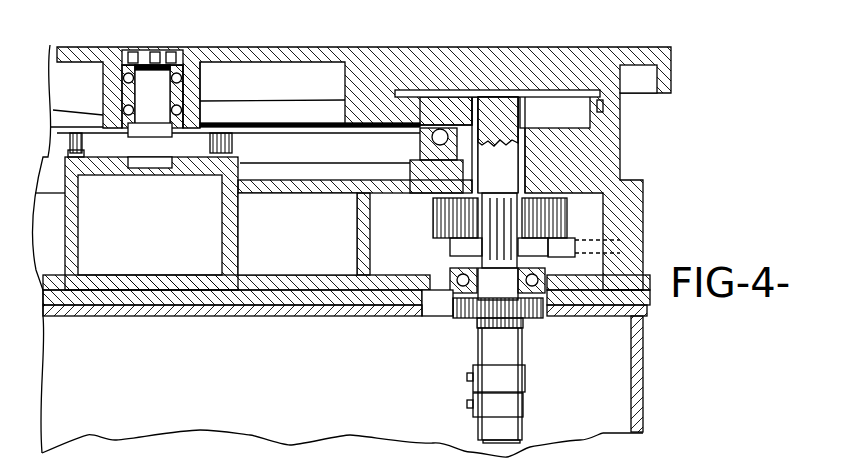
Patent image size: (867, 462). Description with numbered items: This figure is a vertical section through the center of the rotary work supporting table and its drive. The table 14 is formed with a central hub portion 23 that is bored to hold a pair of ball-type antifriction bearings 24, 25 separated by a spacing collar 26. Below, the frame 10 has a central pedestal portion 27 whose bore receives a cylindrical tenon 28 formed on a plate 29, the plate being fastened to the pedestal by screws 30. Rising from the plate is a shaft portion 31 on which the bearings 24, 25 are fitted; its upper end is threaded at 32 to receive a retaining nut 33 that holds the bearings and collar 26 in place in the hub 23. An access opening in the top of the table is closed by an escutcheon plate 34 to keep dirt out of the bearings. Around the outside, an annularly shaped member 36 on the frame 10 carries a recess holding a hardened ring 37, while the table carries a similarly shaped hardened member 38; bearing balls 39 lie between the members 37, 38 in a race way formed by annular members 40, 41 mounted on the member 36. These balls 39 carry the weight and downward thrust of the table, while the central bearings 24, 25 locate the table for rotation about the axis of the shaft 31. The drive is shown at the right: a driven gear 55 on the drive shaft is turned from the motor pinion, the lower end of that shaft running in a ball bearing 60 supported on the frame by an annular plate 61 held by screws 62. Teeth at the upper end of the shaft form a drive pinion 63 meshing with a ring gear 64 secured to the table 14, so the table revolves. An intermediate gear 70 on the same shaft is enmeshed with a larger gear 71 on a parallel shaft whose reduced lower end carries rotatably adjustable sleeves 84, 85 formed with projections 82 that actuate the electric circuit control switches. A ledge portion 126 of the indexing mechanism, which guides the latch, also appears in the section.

The frame 10 is at (640, 350).
The table 14 is at (352, 34).
The central hub portion 23 is at (192, 94).
The antifriction bearing 24 is at (200, 74).
The antifriction bearing 25 is at (178, 110).
The collar 26 is at (123, 80).
The central pedestal portion 27 is at (205, 168).
The cylindrical tenon 28 is at (137, 168).
The plate 29 is at (70, 146).
The screws 30 is at (72, 134).
The shaft portion 31 is at (147, 97).
The threaded portion 32 is at (153, 52).
The retaining nut 33 is at (137, 52).
The escutcheon plate 34 is at (115, 47).
The annularly shaped member 36 is at (425, 172).
The ring 37 is at (440, 162).
The hardened member 38 is at (447, 117).
The bearing balls 39 is at (432, 139).
The annular member 40 is at (421, 134).
The annular member 41 is at (480, 112).
The driven gear 55 is at (470, 320).
The ball bearing 60 is at (590, 300).
The annular plate 61 is at (440, 308).
The screws 62 is at (455, 278).
The drive pinion 63 is at (520, 111).
The ring gear 64 is at (420, 90).
The gear 70 is at (492, 239).
The larger gear 71 is at (440, 223).
The projections 82 is at (467, 377).
The sleeve 84 is at (525, 375).
The sleeve 85 is at (523, 406).
The ledge portion 126 is at (594, 218).